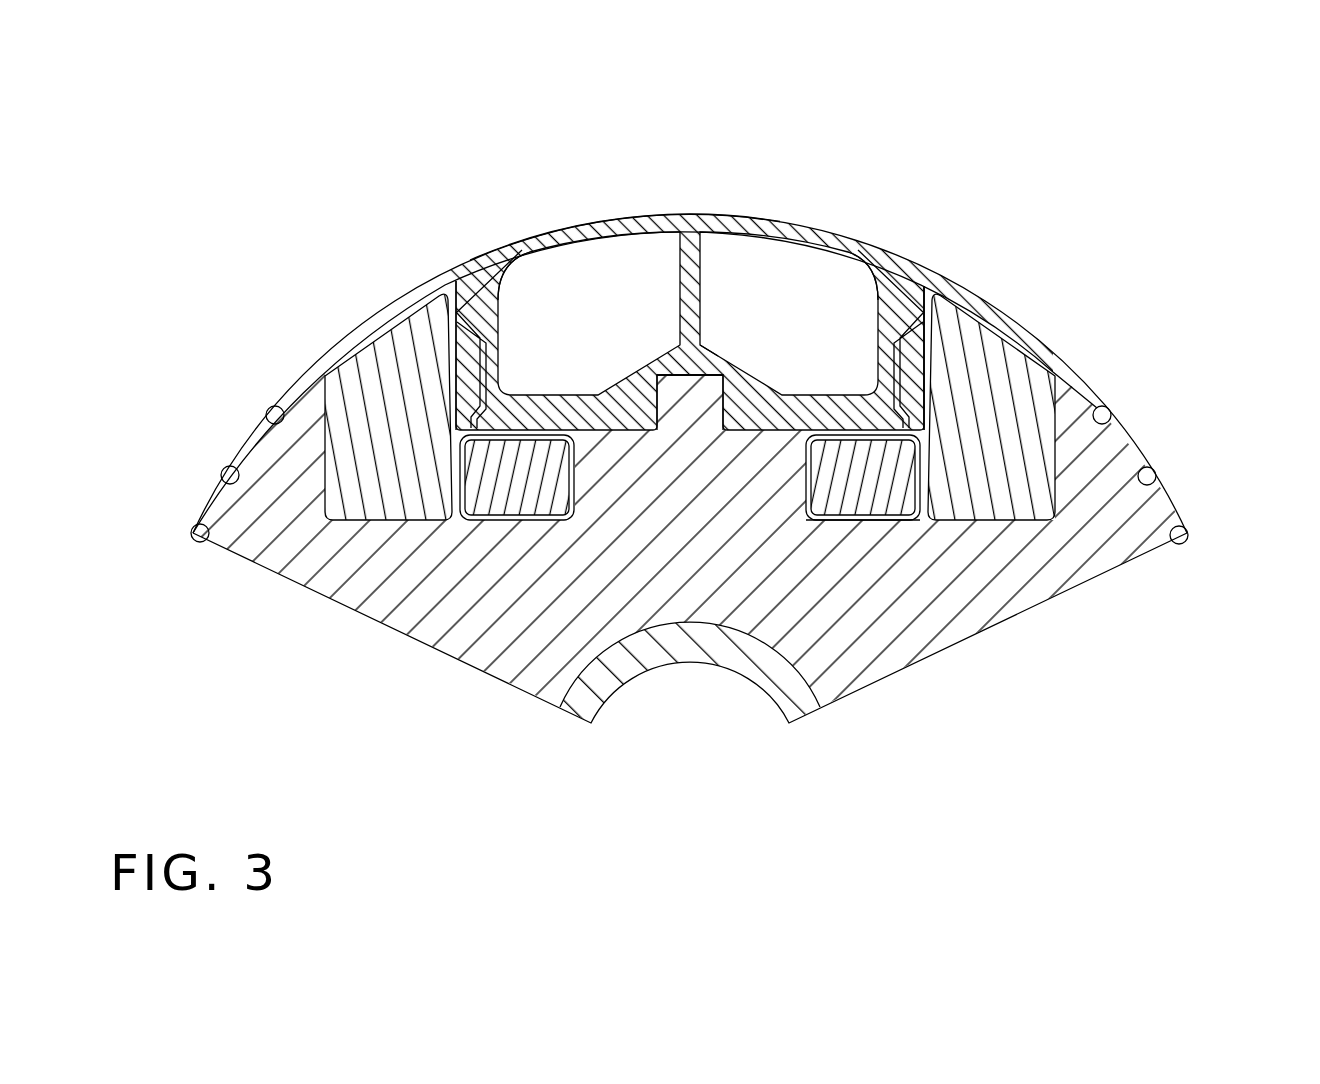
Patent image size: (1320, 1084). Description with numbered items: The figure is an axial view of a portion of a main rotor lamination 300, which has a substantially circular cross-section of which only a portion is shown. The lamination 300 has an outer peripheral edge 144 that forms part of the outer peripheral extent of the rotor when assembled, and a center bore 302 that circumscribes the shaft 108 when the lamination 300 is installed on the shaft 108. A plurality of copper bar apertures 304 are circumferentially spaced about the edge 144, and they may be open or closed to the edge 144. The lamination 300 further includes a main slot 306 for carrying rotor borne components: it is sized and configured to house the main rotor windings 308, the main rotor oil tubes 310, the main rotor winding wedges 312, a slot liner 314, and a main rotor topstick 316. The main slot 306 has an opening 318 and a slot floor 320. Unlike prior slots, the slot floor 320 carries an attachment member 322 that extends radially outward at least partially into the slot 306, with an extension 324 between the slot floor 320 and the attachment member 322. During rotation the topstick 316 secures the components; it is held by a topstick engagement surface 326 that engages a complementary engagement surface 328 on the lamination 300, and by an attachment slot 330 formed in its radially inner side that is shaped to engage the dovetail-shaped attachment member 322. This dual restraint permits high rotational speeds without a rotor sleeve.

The shaft 108 is at (800, 708).
The outer peripheral edge 144 is at (1147, 447).
The main rotor lamination 300 is at (1135, 212).
The center bore 302 is at (790, 752).
The copper bar apertures 304 is at (268, 408).
The main slot 306 is at (783, 198).
The main rotor windings 308 is at (416, 440).
The main rotor oil tubes 310 is at (544, 493).
The main rotor winding wedges 312 is at (483, 327).
The slot liner 314 is at (950, 285).
The main rotor topstick 316 is at (720, 212).
The opening 318 is at (568, 218).
The slot floor 320 is at (873, 521).
The attachment member 322 is at (688, 412).
The extension 324 is at (780, 502).
The topstick engagement surface 326 is at (453, 293).
The complementary engagement surface 328 is at (477, 287).
The attachment slot 330 is at (737, 373).